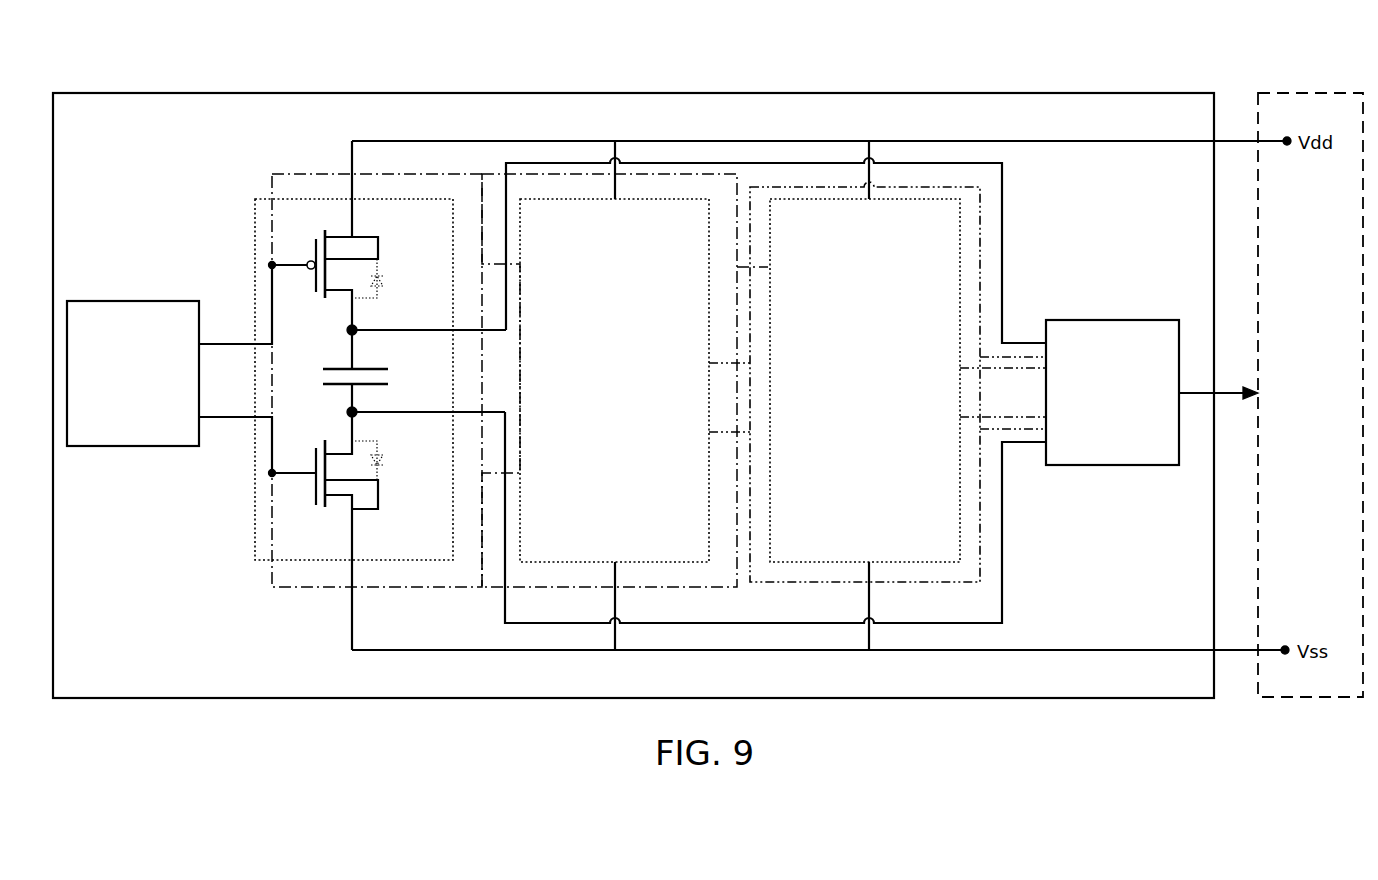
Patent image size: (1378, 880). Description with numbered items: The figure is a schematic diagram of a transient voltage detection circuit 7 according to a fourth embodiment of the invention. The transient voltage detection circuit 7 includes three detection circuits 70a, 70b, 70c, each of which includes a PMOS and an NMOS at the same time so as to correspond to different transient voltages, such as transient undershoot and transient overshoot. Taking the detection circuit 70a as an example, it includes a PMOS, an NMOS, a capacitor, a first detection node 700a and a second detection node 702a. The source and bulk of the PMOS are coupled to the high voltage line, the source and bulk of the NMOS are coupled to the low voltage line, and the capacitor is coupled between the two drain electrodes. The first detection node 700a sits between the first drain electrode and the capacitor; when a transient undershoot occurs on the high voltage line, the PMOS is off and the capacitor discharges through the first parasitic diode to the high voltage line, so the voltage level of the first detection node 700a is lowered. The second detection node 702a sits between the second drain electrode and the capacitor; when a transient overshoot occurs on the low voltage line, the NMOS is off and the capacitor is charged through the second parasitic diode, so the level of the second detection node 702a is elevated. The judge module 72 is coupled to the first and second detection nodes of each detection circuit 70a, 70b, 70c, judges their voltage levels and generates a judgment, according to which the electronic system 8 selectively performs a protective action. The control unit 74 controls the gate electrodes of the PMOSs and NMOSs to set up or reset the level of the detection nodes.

The transient voltage detection circuit 7 is at (478, 93).
The electronic system 8 is at (1297, 93).
The judge module 72 is at (1090, 320).
The control unit 74 is at (140, 447).
The detection circuit 70a is at (425, 561).
The detection circuit 70b is at (660, 563).
The detection circuit 70c is at (885, 563).
The first detection node 700a is at (357, 327).
The second detection node 702a is at (357, 416).